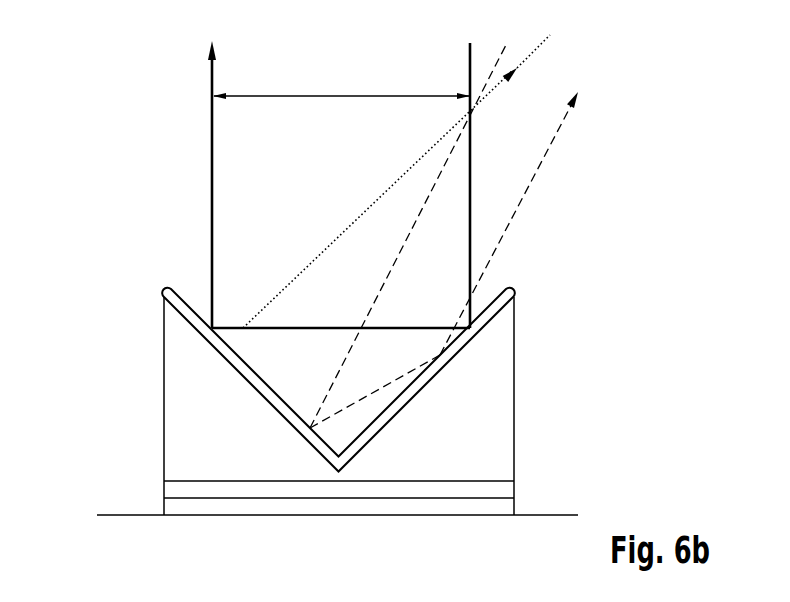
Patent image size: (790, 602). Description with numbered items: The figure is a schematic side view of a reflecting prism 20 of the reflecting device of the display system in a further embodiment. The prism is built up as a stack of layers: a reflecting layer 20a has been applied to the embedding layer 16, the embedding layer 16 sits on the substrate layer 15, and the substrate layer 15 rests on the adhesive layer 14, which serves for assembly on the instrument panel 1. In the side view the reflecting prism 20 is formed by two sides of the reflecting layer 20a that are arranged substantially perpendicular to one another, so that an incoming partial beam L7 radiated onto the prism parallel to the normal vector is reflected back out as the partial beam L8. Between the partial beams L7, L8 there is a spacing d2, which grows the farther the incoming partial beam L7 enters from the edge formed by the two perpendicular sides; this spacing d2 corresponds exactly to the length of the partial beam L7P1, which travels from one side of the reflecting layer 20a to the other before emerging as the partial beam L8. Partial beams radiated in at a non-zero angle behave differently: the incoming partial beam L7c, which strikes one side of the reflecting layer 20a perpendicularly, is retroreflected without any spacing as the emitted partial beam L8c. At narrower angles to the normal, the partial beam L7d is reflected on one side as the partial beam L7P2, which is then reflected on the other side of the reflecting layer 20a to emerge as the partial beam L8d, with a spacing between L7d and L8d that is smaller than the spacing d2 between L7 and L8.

The instrument panel 1 is at (548, 515).
The adhesive layer 14 is at (177, 503).
The substrate layer 15 is at (177, 487).
The embedding layer 16 is at (178, 415).
The reflecting prism 20 is at (293, 184).
The reflecting layer 20a is at (187, 312).
The spacing between partial beams L7 and L8 d2 is at (267, 95).
The incoming partial beam L7 is at (470, 64).
The emergent partial beam L8 is at (212, 195).
The incoming partial beam at an angle L7c is at (537, 50).
The emitted partial beam L8c is at (490, 93).
The incoming partial beam at a narrower angle L7d is at (400, 250).
The emergent partial beam L8d is at (523, 195).
The internally reflected partial beam L7P1 is at (297, 332).
The internally reflected partial beam L7P2 is at (387, 386).